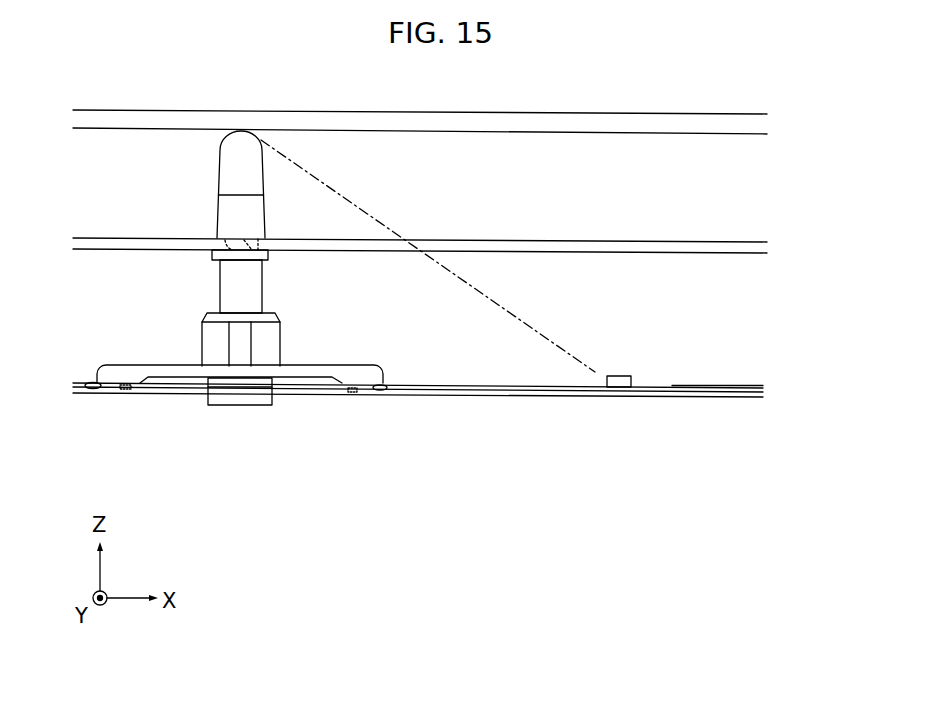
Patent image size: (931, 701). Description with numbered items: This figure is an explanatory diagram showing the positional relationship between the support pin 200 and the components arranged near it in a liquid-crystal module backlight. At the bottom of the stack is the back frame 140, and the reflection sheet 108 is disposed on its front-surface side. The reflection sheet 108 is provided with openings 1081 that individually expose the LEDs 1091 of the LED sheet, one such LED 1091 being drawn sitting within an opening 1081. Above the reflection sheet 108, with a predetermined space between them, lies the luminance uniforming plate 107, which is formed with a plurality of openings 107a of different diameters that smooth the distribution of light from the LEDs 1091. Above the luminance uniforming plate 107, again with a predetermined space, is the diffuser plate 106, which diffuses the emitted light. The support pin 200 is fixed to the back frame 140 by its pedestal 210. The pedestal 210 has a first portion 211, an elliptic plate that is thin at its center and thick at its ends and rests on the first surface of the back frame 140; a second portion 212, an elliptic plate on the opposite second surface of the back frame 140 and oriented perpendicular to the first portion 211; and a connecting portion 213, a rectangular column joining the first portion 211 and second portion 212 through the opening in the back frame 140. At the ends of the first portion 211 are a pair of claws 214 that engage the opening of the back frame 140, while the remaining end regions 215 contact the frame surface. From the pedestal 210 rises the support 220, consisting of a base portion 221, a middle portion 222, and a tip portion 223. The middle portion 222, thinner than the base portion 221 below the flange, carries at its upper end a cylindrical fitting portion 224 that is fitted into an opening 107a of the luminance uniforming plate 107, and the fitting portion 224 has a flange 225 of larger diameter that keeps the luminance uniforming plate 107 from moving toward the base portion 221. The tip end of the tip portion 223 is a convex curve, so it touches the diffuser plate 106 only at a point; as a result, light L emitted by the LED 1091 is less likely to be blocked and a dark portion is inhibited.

The diffuser plate 106 is at (758, 123).
The luminance uniforming plate 107 is at (758, 247).
The opening 107a is at (232, 240).
The reflection sheet 108 is at (750, 387).
The opening 1081 is at (670, 386).
The LED 1091 is at (615, 375).
The back frame 140 is at (762, 394).
The support pin 200 is at (213, 146).
The pedestal 210 is at (326, 475).
The first portion 211 is at (175, 368).
The second portion 212 is at (225, 400).
The connecting portion 213 is at (270, 383).
The claw 214 is at (128, 389).
The region 215 is at (92, 385).
The support 220 is at (170, 189).
The base portion 221 is at (205, 332).
The middle portion 222 is at (253, 282).
The tip portion 223 is at (230, 170).
The fitting portion 224 is at (248, 242).
The flange 225 is at (227, 255).
The light L is at (385, 225).